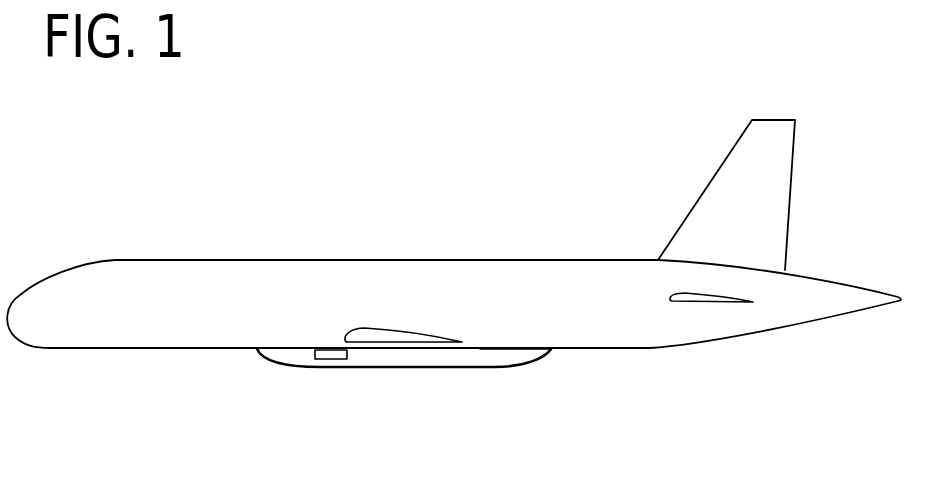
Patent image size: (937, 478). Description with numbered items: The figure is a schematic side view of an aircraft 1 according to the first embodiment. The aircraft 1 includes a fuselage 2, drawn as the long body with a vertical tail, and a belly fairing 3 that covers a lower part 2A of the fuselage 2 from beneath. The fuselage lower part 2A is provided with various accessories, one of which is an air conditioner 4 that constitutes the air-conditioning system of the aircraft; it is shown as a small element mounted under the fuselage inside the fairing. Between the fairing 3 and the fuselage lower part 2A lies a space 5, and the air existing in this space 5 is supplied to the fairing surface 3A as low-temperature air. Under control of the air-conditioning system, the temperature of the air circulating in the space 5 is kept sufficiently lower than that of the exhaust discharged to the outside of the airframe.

The aircraft 1 is at (596, 166).
The fuselage 2 is at (460, 260).
The lower part of the fuselage 2A is at (448, 350).
The belly fairing 3 is at (525, 368).
The fairing surface 3A is at (377, 368).
The air conditioner 4 is at (323, 368).
The space 5 is at (500, 350).